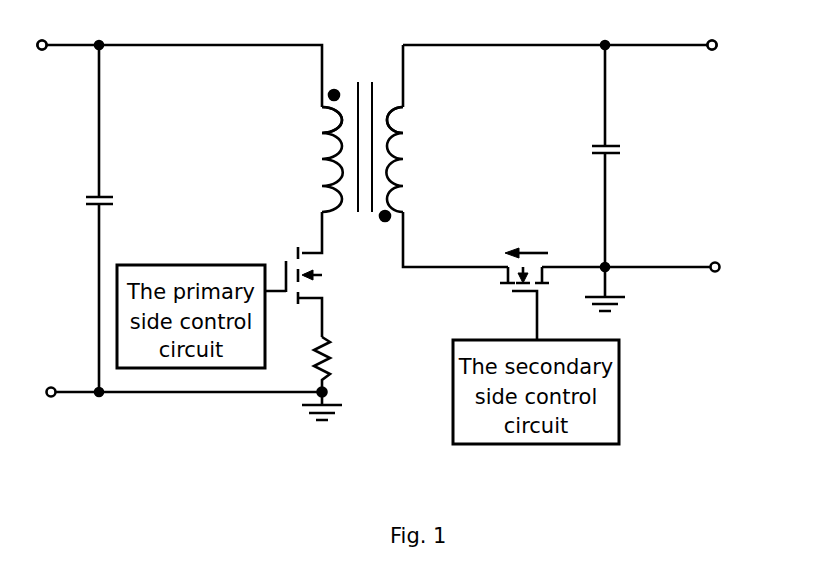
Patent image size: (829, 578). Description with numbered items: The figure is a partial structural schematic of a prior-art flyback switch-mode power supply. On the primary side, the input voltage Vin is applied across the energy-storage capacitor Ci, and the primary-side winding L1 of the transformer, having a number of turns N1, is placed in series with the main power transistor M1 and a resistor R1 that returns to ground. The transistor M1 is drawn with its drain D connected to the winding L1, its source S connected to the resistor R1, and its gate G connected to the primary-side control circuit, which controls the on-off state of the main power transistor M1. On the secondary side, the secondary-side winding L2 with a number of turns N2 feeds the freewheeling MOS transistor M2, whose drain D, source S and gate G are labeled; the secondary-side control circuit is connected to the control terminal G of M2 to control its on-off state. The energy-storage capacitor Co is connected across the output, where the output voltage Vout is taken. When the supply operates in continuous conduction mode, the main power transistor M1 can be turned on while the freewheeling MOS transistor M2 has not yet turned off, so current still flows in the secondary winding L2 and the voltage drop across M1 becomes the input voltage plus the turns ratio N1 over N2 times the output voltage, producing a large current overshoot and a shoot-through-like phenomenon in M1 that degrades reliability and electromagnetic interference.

The input voltage terminal Vin is at (38, 80).
The energy-storage capacitor Ci is at (85, 218).
The number of turns of the primary-side winding N1 is at (315, 120).
The primary-side winding L1 is at (316, 151).
The number of turns of the secondary-side winding N2 is at (412, 120).
The secondary-side winding L2 is at (407, 164).
The energy-storage capacitor Co is at (594, 156).
The output voltage terminal Vout is at (727, 37).
The main power transistor M1 is at (280, 274).
The freewheeling MOS transistor M2 is at (503, 289).
The sense resistor R1 is at (338, 367).
The drain terminal D is at (402, 251).
The source terminal S is at (449, 295).
The gate terminal G is at (398, 312).